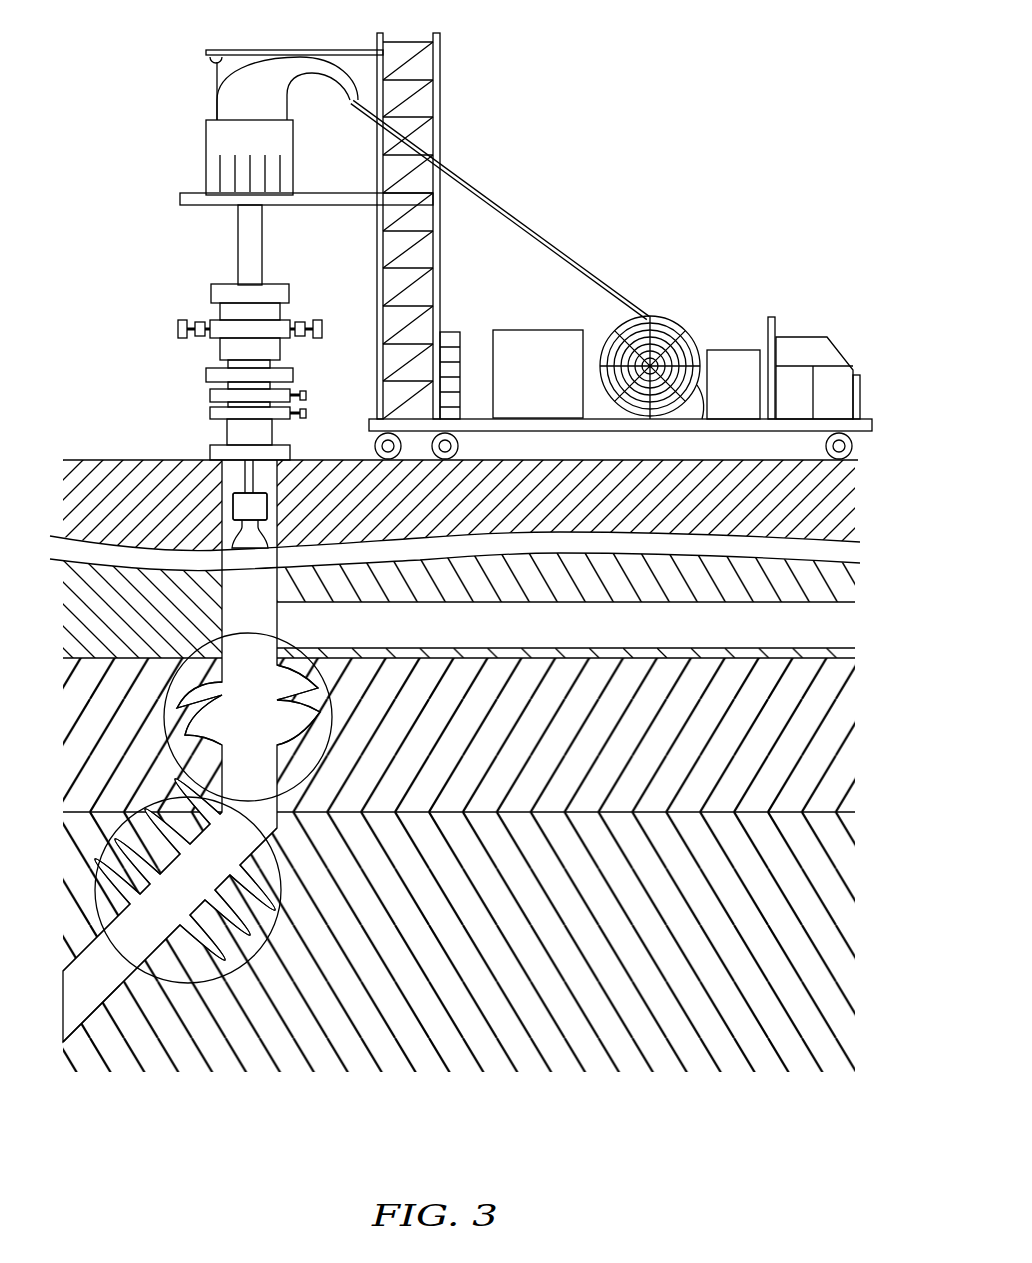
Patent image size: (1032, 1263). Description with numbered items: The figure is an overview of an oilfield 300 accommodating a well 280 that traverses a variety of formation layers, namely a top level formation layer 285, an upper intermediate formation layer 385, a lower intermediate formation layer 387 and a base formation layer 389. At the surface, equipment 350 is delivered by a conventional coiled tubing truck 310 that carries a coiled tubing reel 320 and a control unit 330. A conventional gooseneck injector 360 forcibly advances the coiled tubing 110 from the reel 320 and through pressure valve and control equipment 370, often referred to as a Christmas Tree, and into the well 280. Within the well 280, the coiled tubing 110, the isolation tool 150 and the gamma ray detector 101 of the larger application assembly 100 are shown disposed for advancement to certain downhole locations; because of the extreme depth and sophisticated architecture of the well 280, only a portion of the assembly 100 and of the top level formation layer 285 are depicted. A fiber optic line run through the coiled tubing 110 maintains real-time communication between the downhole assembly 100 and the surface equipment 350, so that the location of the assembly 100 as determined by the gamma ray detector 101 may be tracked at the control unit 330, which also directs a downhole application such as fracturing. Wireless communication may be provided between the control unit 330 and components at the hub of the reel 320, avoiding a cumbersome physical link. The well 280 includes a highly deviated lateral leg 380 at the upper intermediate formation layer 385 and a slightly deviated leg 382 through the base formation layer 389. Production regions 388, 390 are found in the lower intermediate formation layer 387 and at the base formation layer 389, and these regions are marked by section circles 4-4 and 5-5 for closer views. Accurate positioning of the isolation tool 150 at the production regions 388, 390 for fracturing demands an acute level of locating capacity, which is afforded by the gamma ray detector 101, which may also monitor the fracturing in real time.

The application assembly 100 is at (277, 480).
The gamma ray detector 101 is at (230, 498).
The coiled tubing 110 is at (522, 217).
The isolation tool 150 is at (235, 537).
The well 280 is at (231, 602).
The top level formation layer 285 is at (340, 510).
The oilfield 300 is at (63, 458).
The coiled tubing truck 310 is at (835, 323).
The coiled tubing reel 320 is at (688, 340).
The control unit 330 is at (520, 348).
The surface equipment 350 is at (527, 230).
The gooseneck injector 360 is at (263, 75).
The pressure valve and control equipment 370 is at (178, 297).
The highly deviated lateral leg 380 is at (424, 637).
The slightly deviated leg 382 is at (73, 992).
The upper intermediate formation layer 385 is at (103, 619).
The lower intermediate formation layer 387 is at (549, 734).
The production region 388 is at (235, 705).
The base formation layer 389 is at (470, 952).
The production region 390 is at (183, 868).
The section line 4-4 is at (330, 732).
The section line 5-5 is at (281, 922).